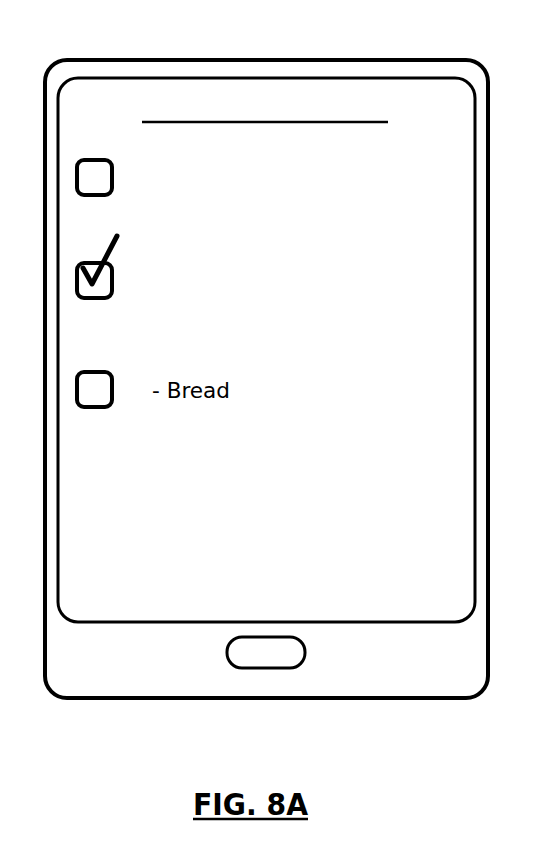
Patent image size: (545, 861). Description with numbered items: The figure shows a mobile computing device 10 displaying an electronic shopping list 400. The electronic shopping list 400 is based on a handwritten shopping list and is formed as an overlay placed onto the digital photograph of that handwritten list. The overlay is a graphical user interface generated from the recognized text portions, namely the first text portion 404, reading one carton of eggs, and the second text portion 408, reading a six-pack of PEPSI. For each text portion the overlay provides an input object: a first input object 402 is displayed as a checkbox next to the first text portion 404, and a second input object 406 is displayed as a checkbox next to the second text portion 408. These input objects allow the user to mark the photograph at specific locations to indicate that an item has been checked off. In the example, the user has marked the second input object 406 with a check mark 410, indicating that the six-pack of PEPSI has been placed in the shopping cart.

The mobile computing device 10 is at (81, 59).
The electronic shopping list 400 is at (398, 151).
The first input object 402 is at (95, 196).
The first text portion 404 is at (300, 167).
The second input object 406 is at (107, 299).
The second text portion 408 is at (317, 268).
The check mark 410 is at (124, 233).